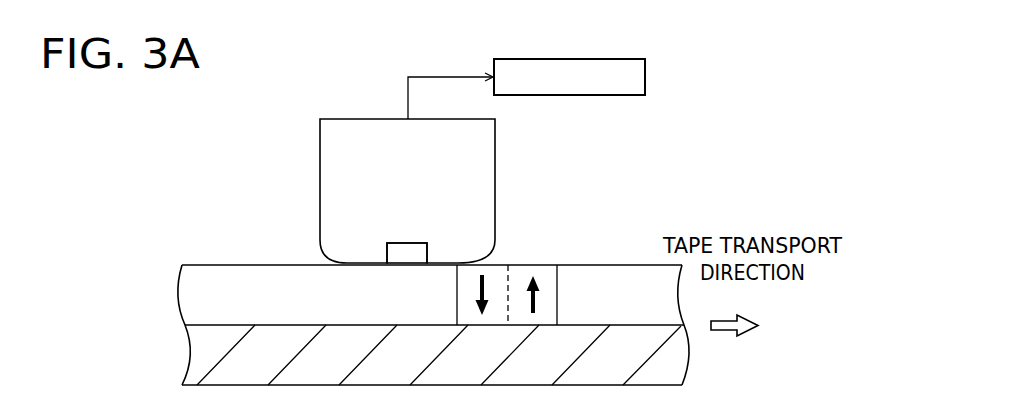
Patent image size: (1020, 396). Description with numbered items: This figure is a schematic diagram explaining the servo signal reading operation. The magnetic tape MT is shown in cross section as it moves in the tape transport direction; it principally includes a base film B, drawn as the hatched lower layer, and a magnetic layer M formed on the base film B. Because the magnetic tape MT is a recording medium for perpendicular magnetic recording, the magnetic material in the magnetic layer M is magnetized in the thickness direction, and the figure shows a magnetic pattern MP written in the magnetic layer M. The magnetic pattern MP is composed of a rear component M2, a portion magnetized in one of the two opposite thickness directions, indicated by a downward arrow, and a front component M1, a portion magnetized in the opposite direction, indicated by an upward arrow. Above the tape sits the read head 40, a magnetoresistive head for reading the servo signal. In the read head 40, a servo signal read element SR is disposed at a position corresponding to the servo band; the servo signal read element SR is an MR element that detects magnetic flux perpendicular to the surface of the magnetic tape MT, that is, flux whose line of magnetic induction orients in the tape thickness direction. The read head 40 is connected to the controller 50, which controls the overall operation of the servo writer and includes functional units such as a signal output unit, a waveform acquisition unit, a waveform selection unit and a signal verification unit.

The read head 40 is at (306, 126).
The controller 50 is at (645, 74).
The servo signal read element SR is at (397, 243).
The magnetic tape MT is at (221, 242).
The magnetic layer M is at (195, 297).
The base film B is at (200, 357).
The magnetic pattern MP is at (557, 262).
The front component M1 is at (536, 296).
The rear component M2 is at (479, 290).